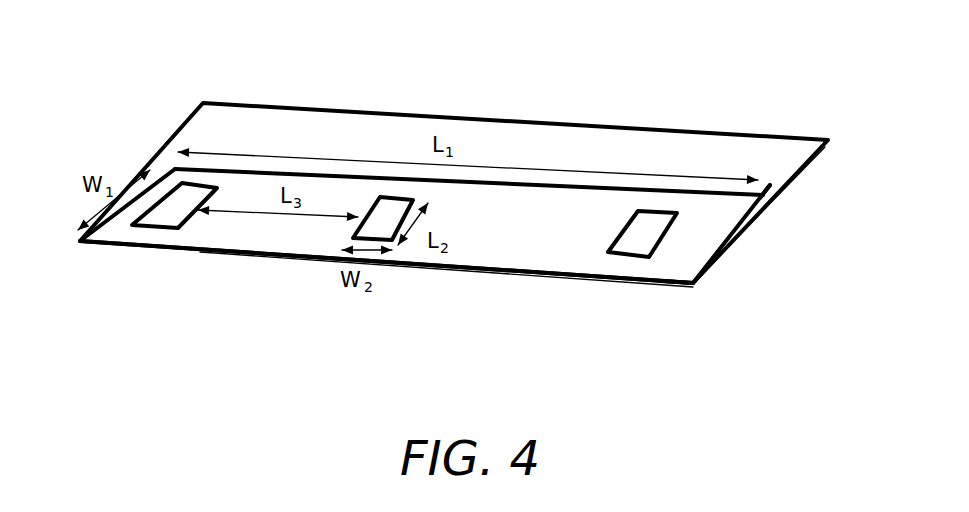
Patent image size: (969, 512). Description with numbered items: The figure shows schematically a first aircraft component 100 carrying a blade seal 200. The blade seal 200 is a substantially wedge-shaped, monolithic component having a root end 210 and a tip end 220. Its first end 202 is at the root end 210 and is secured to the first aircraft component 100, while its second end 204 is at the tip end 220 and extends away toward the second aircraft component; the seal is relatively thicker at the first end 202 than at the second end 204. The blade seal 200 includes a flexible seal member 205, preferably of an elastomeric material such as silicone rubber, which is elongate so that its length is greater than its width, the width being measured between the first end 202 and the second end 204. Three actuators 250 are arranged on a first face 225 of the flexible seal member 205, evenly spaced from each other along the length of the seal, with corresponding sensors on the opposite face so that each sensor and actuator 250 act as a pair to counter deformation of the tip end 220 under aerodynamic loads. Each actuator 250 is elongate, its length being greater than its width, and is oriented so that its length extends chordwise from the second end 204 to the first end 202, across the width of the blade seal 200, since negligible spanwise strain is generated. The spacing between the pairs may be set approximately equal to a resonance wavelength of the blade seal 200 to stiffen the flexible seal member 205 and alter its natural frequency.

The first aircraft component 100 is at (223, 133).
The blade seal 200 is at (167, 163).
The first end 202 is at (608, 188).
The second end 204 is at (412, 263).
The flexible seal member 205 is at (733, 233).
The root end 210 is at (760, 206).
The tip end 220 is at (172, 250).
The first face 225 is at (670, 267).
The actuator 250 is at (637, 242).